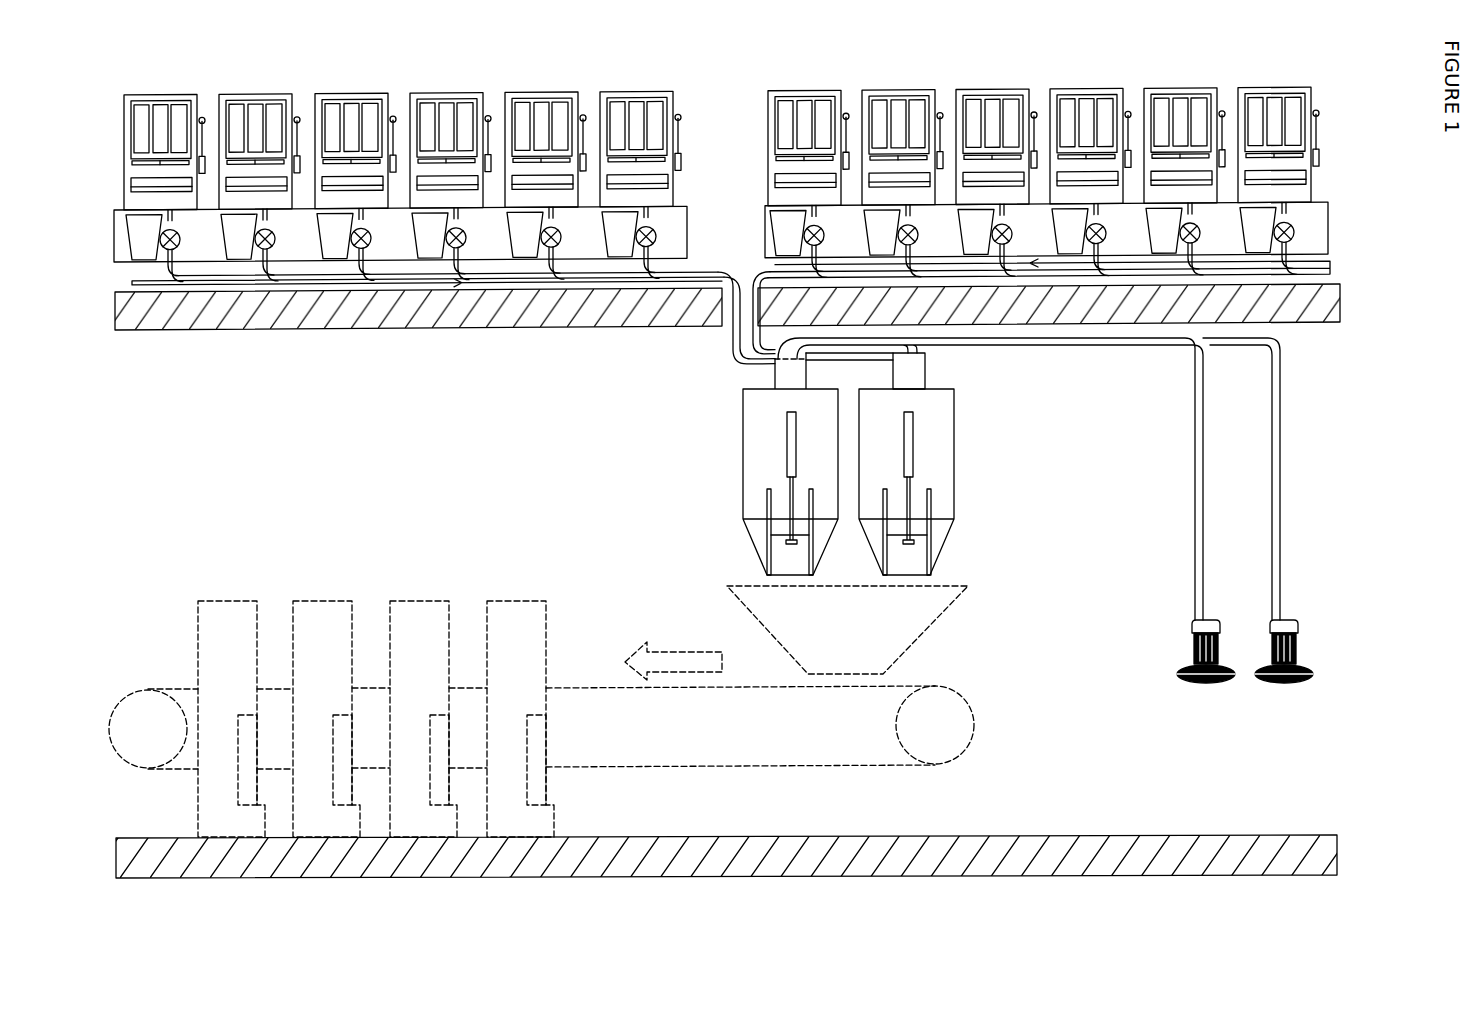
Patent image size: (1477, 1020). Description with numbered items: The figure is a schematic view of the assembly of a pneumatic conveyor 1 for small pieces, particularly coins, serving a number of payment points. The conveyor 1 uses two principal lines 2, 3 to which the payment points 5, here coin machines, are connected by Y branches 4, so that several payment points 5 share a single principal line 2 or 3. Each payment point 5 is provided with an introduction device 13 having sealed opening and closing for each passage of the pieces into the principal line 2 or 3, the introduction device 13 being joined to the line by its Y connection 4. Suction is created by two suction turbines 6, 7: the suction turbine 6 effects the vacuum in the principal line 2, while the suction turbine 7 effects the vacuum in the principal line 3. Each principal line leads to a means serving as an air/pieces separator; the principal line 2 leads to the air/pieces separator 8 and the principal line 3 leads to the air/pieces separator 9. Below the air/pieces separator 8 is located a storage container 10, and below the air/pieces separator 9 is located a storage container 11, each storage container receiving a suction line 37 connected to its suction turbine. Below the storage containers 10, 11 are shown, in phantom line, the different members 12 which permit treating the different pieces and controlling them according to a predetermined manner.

The conveyor 1 is at (1096, 482).
The principal line 2 is at (686, 272).
The principal line 3 is at (765, 278).
The Y branch 4 is at (1330, 266).
The payment point 5 is at (1253, 99).
The suction turbine 6 is at (1210, 686).
The suction turbine 7 is at (1283, 686).
The air/pieces separator 8 is at (945, 417).
The air/pieces separator 9 is at (765, 427).
The storage container 10 is at (941, 537).
The storage container 11 is at (762, 534).
The members for treating the pieces 12 is at (510, 605).
The introduction device 13 is at (1293, 216).
The suction line 37 is at (1282, 541).